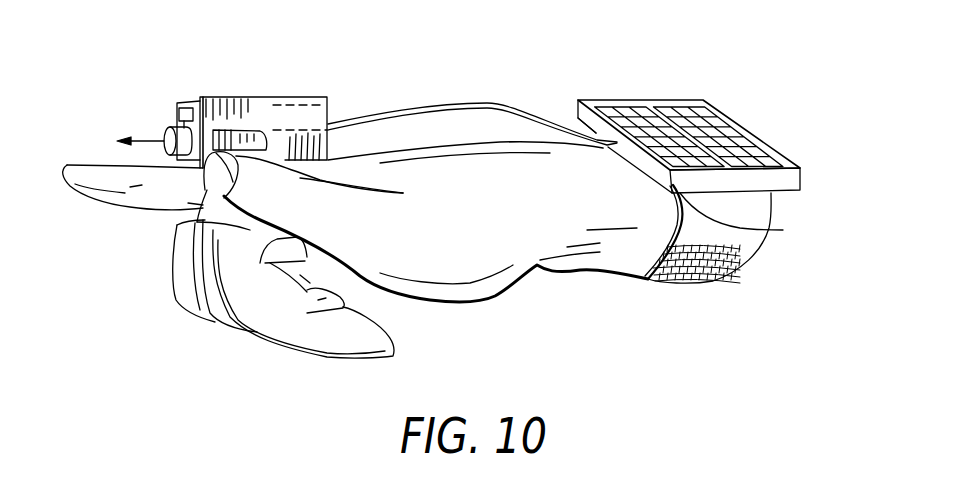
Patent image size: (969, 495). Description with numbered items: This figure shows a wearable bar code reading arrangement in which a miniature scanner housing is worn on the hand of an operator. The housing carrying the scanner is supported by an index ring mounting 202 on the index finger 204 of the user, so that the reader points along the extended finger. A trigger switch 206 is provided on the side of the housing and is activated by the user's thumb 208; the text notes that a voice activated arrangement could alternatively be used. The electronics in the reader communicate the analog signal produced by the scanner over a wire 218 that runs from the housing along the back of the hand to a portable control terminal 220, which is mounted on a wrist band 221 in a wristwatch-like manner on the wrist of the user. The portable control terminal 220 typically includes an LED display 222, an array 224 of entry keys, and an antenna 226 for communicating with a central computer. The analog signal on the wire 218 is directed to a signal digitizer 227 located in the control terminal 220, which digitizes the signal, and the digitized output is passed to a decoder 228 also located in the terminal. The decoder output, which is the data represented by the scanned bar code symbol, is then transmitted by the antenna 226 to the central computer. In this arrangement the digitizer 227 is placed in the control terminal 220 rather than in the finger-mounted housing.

The index ring mounting 202 is at (340, 158).
The index finger 204 is at (138, 185).
The trigger switch 206 is at (258, 132).
The thumb 208 is at (355, 219).
The wire 218 is at (492, 102).
The portable control terminal 220 is at (728, 118).
The wrist band 221 is at (745, 238).
The LED display 222 is at (612, 96).
The array of entry keys 224 is at (676, 95).
The antenna 226 is at (580, 120).
The signal digitizer 227 is at (783, 230).
The decoder 228 is at (786, 196).